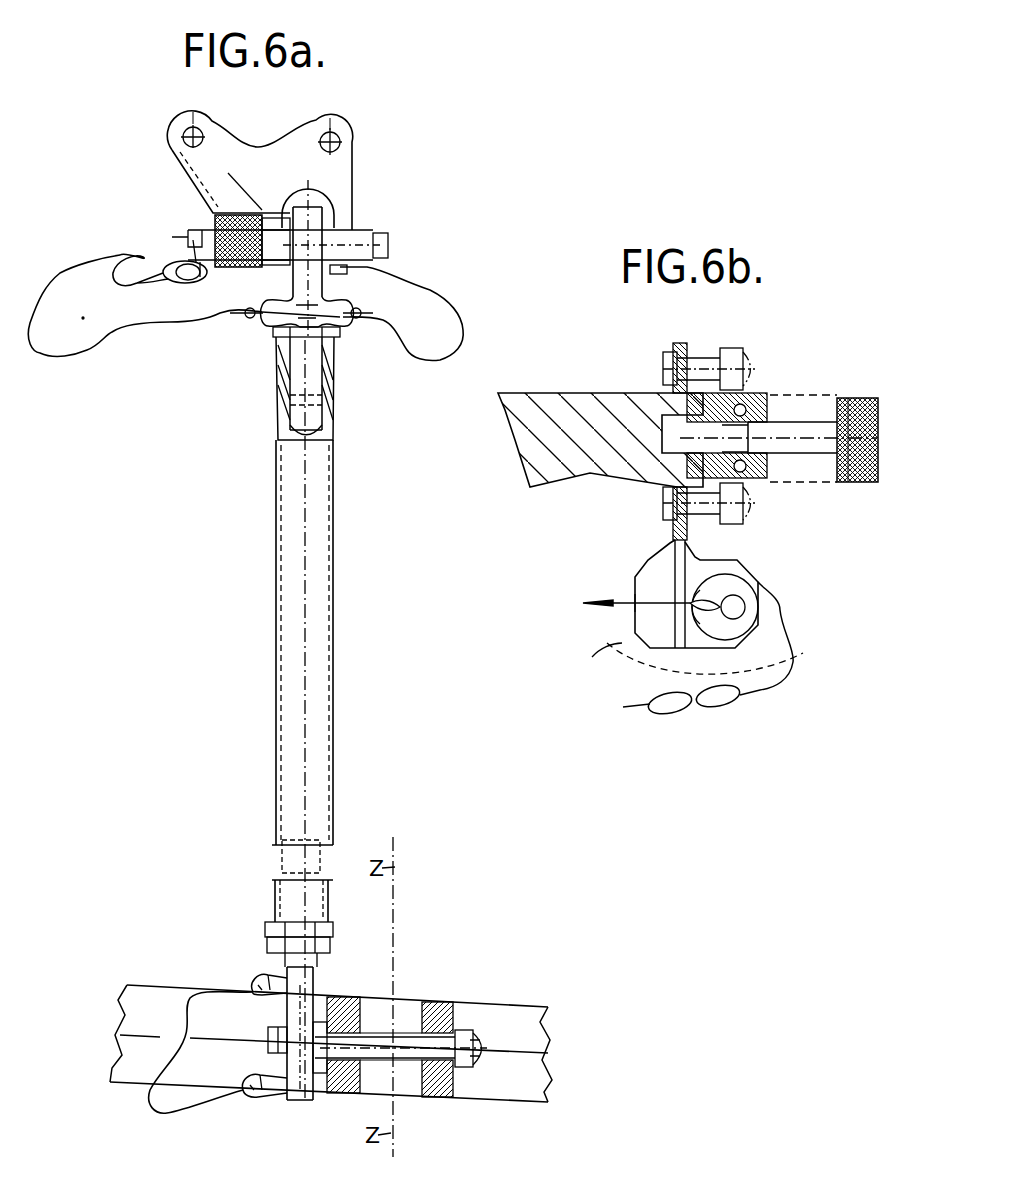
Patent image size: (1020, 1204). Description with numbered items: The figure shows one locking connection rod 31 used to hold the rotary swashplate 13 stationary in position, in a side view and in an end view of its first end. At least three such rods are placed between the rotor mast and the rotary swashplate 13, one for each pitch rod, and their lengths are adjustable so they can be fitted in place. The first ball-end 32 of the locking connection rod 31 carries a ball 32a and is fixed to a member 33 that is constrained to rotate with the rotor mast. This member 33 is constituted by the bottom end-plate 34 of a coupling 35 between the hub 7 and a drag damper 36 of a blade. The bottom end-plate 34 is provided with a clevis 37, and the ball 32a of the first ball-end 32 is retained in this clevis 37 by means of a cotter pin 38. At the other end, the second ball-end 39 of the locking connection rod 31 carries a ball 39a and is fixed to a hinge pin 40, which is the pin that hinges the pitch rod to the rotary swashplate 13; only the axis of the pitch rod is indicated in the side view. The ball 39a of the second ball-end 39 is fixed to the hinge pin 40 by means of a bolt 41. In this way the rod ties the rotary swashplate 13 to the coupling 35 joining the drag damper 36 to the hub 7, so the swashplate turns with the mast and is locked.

In FIG. 6B, the hub 7 is at (590, 430).
In FIG. 6A, the rotary swashplate 13 is at (513, 1083).
In FIG. 6A, the locking connection rod 31 is at (262, 693).
In FIG. 6A, the first ball-end 32 is at (283, 353).
In FIG. 6A, the ball 32a is at (313, 250).
In FIG. 6B, the member 33 is at (797, 610).
In FIG. 6A, the bottom end-plate 34 is at (193, 187).
In FIG. 6B, the bottom end-plate 34 is at (640, 568).
In FIG. 6B, the coupling 35 is at (717, 525).
In FIG. 6B, the drag damper 36 is at (800, 438).
In FIG. 6A, the clevis 37 is at (342, 222).
In FIG. 6A, the cotter pin 38 is at (382, 243).
In FIG. 6A, the second ball-end 39 is at (273, 957).
In FIG. 6A, the ball 39a is at (300, 1073).
In FIG. 6A, the hinge pin 40 is at (398, 1053).
In FIG. 6A, the bolt 41 is at (267, 1033).